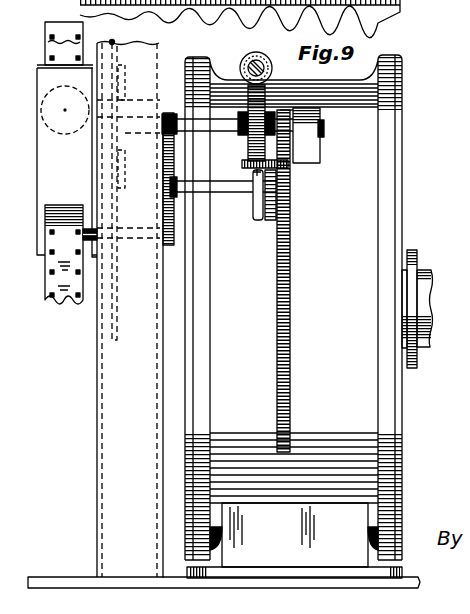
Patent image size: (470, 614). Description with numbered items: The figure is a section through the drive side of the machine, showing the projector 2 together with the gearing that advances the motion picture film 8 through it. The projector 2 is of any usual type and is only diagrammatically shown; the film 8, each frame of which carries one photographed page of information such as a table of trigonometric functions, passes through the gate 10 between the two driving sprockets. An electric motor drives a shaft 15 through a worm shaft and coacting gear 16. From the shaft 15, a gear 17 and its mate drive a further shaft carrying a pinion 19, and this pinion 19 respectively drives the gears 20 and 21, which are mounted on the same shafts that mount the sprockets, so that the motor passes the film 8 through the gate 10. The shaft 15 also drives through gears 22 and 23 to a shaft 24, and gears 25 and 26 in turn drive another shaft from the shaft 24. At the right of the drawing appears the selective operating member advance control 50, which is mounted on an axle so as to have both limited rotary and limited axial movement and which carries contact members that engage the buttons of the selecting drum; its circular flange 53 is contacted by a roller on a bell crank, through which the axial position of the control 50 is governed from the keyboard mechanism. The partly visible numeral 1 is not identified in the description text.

The machine 1 is at (466, 11).
The projector 2 is at (97, 373).
The motion picture film 8 is at (67, 302).
The gate 10 is at (62, 63).
The shaft 15 is at (293, 133).
The worm shaft and coacting gear 16 is at (257, 84).
The gear 17 is at (125, 170).
The pinion 19 is at (113, 112).
The gear 20 is at (114, 41).
The gear 21 is at (115, 325).
The gear 22 is at (173, 113).
The gear 23 is at (172, 235).
The shaft 24 is at (231, 193).
The gear 25 is at (273, 208).
The gear 26 is at (293, 335).
The selective operating member advance control 50 is at (424, 271).
The circular flange 53 is at (412, 250).